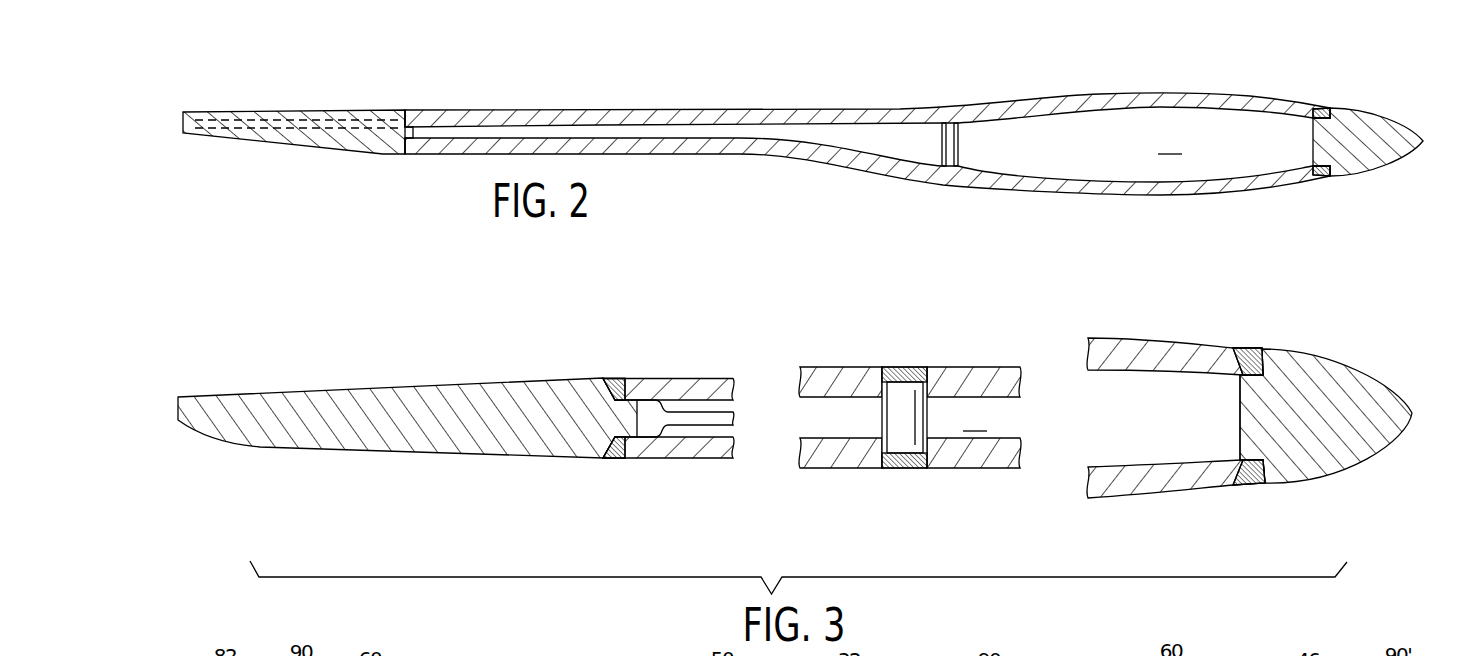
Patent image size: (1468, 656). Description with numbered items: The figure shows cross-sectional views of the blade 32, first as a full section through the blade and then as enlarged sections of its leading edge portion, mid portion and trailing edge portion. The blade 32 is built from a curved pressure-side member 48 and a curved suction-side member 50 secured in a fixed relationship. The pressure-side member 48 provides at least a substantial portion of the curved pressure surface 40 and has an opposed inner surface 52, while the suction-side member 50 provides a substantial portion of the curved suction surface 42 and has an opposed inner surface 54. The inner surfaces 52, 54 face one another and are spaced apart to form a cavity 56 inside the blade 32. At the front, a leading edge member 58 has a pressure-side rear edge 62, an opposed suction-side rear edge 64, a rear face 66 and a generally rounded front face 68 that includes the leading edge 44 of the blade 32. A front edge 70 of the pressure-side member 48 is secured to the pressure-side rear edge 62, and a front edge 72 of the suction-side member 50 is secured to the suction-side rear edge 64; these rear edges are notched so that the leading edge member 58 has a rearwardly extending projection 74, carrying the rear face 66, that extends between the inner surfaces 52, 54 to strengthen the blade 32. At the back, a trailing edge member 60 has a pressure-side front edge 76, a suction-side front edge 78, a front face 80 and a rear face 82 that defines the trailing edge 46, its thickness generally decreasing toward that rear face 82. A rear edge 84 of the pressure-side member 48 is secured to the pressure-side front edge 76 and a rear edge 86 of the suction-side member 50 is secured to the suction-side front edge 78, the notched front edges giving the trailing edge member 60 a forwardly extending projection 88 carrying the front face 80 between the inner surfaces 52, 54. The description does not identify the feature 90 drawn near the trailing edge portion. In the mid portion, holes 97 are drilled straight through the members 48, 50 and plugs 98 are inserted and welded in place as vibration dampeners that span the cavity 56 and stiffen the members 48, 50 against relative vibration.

In FIG. 2, the blade 32 is at (953, 81).
In FIG. 2, the curved pressure surface 40 is at (823, 147).
In FIG. 2, the curved suction surface 42 is at (290, 110).
In FIG. 2, the leading edge 44 is at (1420, 148).
In FIG. 3, the leading edge 44 is at (1412, 418).
In FIG. 2, the trailing edge 46 is at (178, 122).
In FIG. 3, the trailing edge 46 is at (180, 420).
In FIG. 2, the pressure-side member 48 is at (867, 191).
In FIG. 3, the pressure-side member 48 is at (934, 486).
In FIG. 2, the suction-side member 50 is at (867, 99).
In FIG. 3, the suction-side member 50 is at (933, 345).
In FIG. 2, the inner surface 52 is at (1062, 178).
In FIG. 3, the inner surface 52 is at (740, 430).
In FIG. 2, the inner surface 54 is at (1057, 127).
In FIG. 3, the inner surface 54 is at (738, 411).
In FIG. 2, the cavity 56 is at (1170, 143).
In FIG. 3, the cavity 56 is at (975, 420).
In FIG. 2, the leading edge member 58 is at (1377, 135).
In FIG. 3, the leading edge member 58 is at (1338, 414).
In FIG. 2, the trailing edge member 60 is at (283, 125).
In FIG. 3, the trailing edge member 60 is at (395, 403).
In FIG. 3, the pressure-side rear edge 62 is at (1260, 512).
In FIG. 3, the suction-side rear edge 64 is at (1307, 410).
In FIG. 3, the rear face 66 is at (1240, 412).
In FIG. 3, the front face 68 is at (1338, 438).
In FIG. 3, the front edge 70 is at (1248, 490).
In FIG. 3, the front edge 72 is at (1255, 348).
In FIG. 3, the rearwardly extending projection 74 is at (1240, 440).
In FIG. 3, the pressure-side front edge 76 is at (593, 479).
In FIG. 3, the suction-side front edge 78 is at (606, 347).
In FIG. 3, the front face 80 is at (685, 420).
In FIG. 3, the rear face 82 is at (395, 408).
In FIG. 3, the rear edge 84 is at (617, 458).
In FIG. 3, the rear edge 86 is at (617, 388).
In FIG. 3, the forwardly extending projection 88 is at (648, 400).
In FIG. 2, the hidden joint line 90 is at (380, 107).
In FIG. 3, the holes 97 is at (871, 389).
In FIG. 3, the plugs 98 is at (882, 412).